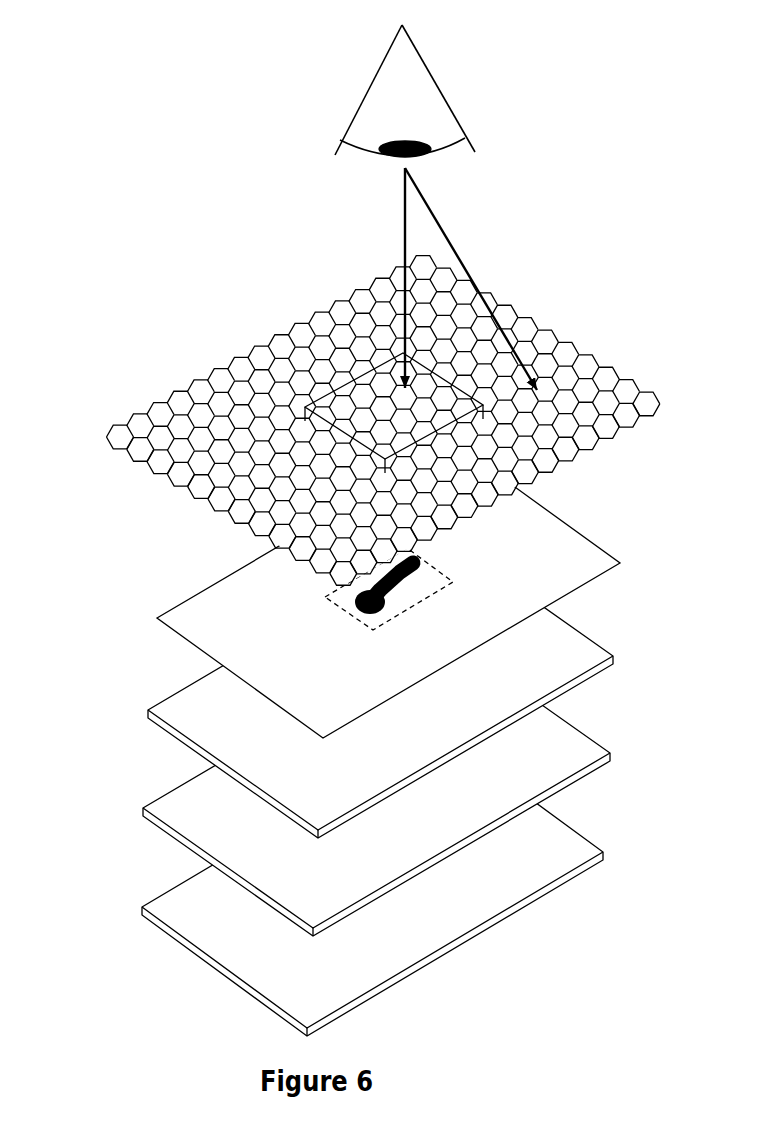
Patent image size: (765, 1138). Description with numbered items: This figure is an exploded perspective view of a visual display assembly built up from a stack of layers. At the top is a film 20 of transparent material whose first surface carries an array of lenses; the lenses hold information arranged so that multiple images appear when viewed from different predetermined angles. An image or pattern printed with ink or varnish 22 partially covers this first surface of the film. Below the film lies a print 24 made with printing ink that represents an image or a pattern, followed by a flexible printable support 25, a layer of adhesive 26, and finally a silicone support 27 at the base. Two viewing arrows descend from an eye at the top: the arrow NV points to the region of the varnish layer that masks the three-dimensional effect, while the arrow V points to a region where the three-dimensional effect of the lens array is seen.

The film of transparent material 20 is at (143, 425).
The image or pattern printed with ink or varnish 22 is at (360, 385).
The print with printing ink 24 is at (353, 598).
The flexible printable support 25 is at (193, 712).
The layer of adhesive 26 is at (186, 810).
The silicone support 27 is at (160, 910).
The arrow NV is at (381, 278).
The arrow V is at (471, 279).